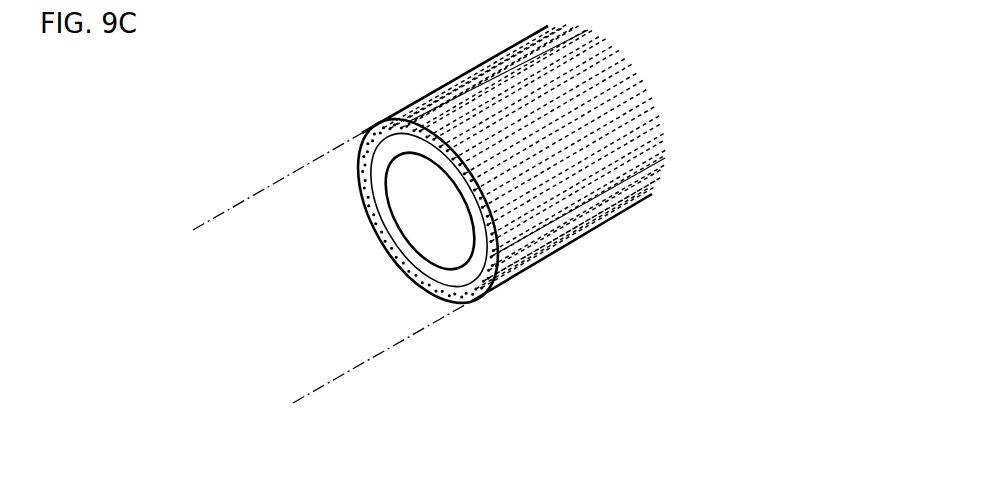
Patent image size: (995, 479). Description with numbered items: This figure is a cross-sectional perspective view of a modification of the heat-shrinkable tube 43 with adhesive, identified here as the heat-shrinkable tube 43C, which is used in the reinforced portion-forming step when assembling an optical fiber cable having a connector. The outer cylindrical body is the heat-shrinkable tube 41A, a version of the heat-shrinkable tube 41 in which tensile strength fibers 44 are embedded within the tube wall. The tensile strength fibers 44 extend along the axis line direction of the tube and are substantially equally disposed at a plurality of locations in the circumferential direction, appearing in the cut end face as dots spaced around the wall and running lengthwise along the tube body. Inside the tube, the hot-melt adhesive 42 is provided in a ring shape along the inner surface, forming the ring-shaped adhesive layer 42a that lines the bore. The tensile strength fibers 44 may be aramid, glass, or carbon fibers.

The heat-shrinkable tube with adhesive 43 is at (497, 166).
The heat-shrinkable tube with adhesive 43C is at (458, 77).
The heat-shrinkable tube 41 is at (465, 177).
The heat-shrinkable tube 41A is at (465, 177).
The tensile strength fibers 44 is at (358, 167).
The hot-melt adhesive 42 is at (395, 222).
The ring-shaped adhesive layer 42a is at (398, 243).